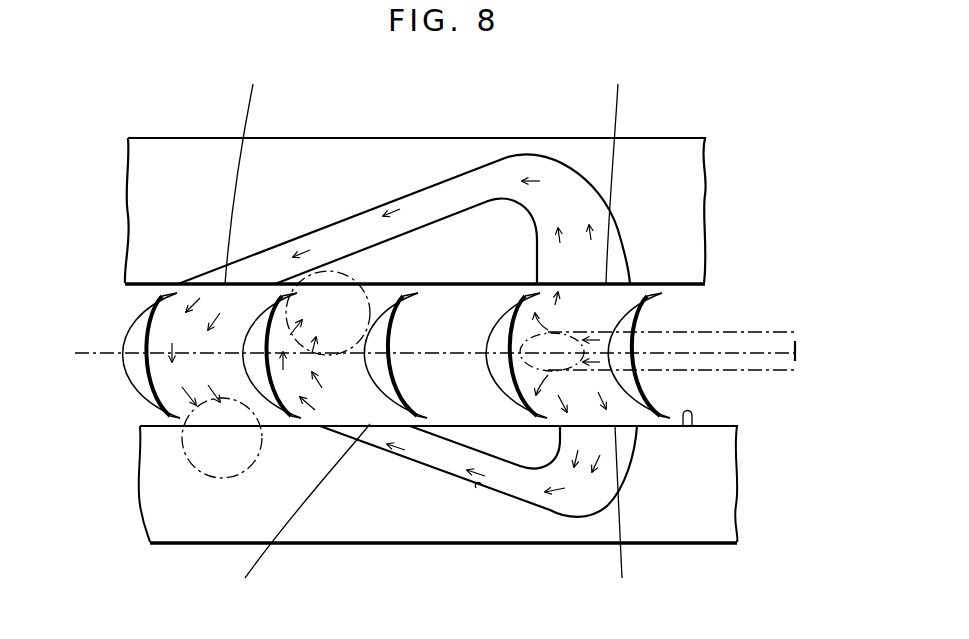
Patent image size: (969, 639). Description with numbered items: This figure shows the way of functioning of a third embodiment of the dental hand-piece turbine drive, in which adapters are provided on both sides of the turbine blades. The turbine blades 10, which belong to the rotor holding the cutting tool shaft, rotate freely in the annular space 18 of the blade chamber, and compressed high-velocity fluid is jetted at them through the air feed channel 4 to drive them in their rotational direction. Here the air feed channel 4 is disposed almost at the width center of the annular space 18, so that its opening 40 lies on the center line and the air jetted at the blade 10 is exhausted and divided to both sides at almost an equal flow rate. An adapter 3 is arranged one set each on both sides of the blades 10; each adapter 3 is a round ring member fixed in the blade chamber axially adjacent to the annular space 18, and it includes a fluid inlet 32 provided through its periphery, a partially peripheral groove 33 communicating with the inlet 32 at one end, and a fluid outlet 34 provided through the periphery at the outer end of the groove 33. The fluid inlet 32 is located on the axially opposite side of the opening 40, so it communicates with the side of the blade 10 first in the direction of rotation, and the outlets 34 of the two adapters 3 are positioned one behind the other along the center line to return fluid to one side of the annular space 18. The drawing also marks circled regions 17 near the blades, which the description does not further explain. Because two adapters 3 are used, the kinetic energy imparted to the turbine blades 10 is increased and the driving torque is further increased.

The adapter 3 is at (690, 183).
The air feed channel 4 is at (763, 365).
The turbine blades 10 is at (140, 311).
The vortex region 17 is at (358, 277).
The annular space 18 is at (688, 426).
The fluid inlet 32 is at (630, 332).
The partially peripheral groove 33 is at (421, 192).
The fluid outlet 34 is at (297, 332).
The opening of the air feed channel 40 is at (565, 336).